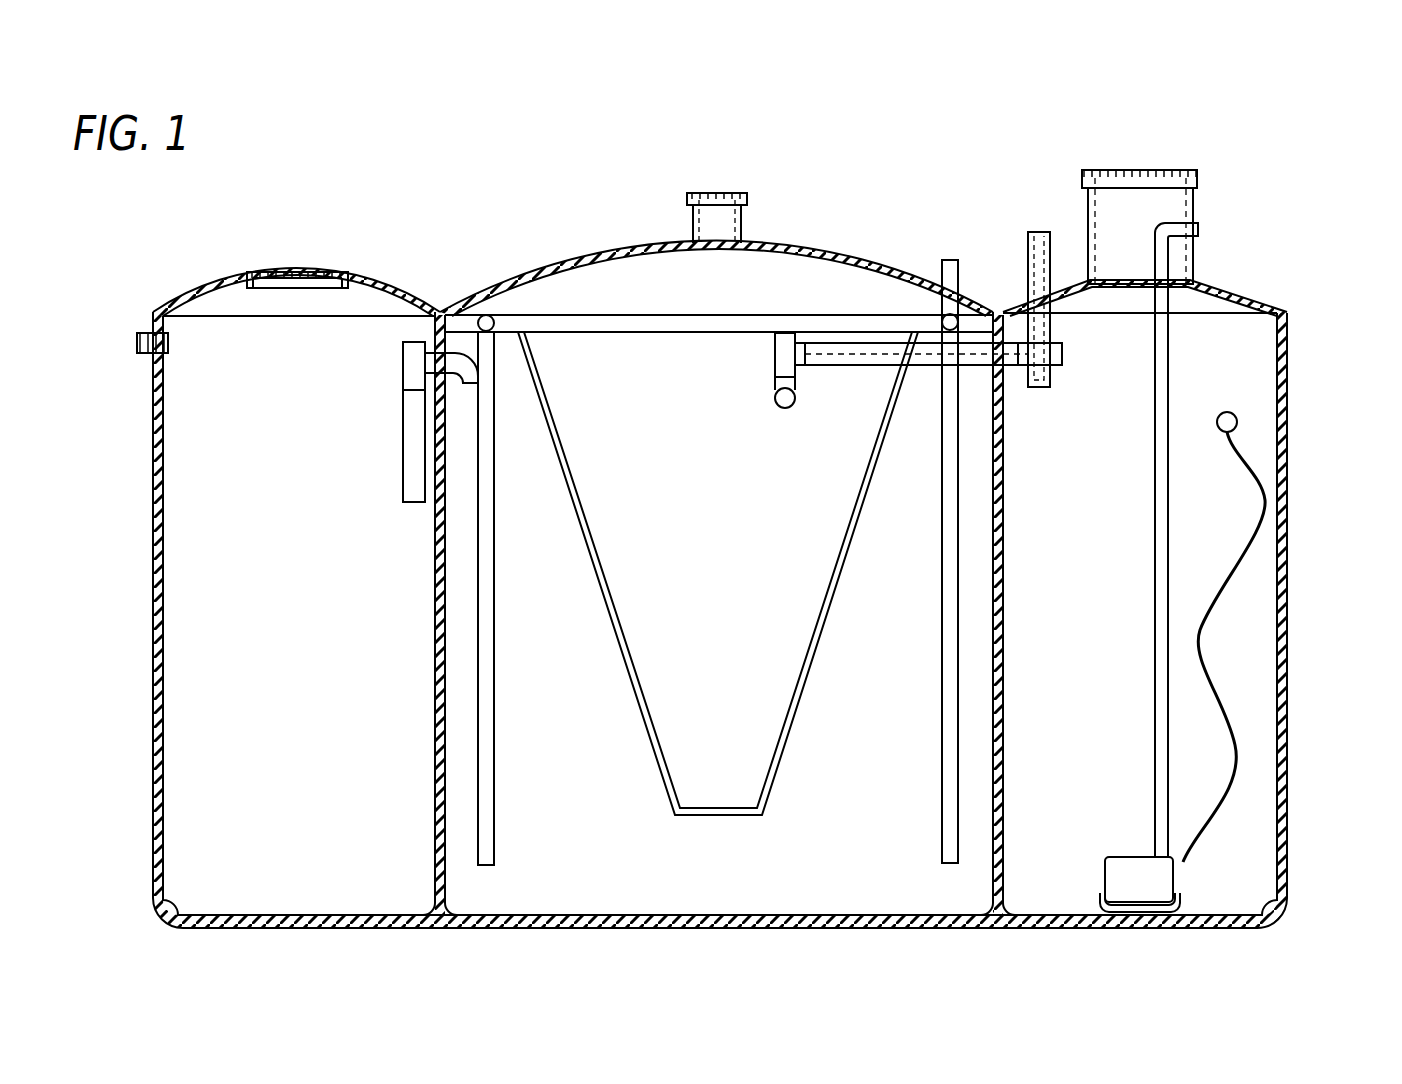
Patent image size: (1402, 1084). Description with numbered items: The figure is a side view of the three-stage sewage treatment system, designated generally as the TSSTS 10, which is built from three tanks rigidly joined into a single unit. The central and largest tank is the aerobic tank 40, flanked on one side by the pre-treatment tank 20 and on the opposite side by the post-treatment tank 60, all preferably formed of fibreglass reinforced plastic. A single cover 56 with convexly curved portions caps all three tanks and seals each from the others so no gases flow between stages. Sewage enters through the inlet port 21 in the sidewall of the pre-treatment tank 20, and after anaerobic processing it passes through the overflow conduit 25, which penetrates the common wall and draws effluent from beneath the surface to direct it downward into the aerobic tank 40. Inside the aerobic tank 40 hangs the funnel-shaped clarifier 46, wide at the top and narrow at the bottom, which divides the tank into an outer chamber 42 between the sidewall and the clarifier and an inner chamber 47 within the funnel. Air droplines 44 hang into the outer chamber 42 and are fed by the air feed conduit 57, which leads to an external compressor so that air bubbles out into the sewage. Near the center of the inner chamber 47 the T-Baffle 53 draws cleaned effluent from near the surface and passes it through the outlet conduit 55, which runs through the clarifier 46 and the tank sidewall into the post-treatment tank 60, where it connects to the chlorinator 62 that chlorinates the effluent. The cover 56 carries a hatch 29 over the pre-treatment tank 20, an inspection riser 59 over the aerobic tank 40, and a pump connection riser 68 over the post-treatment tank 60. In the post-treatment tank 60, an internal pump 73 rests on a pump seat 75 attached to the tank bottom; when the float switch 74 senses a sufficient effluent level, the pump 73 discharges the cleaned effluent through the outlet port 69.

The TSSTS 10 is at (1307, 220).
The pre-treatment tank 20 is at (318, 876).
The inlet port 21 is at (147, 333).
The overflow conduit 25 is at (403, 357).
The hatch 29 is at (303, 270).
The aerobic tank 40 is at (735, 876).
The outer chamber 42 is at (632, 760).
The air droplines 44 is at (494, 865).
The clarifier 46 is at (793, 737).
The inner chamber 47 is at (620, 425).
The T-Baffle 53 is at (778, 352).
The outlet conduit 55 is at (830, 343).
The cover 56 is at (632, 240).
The air feed conduit 57 is at (860, 316).
The inspection riser 59 is at (732, 192).
The post-treatment tank 60 is at (1068, 841).
The chlorinator 62 is at (1040, 232).
The pump connection riser 68 is at (1172, 171).
The outlet port 69 is at (1200, 223).
The internal pump 73 is at (1175, 880).
The float switch 74 is at (1226, 412).
The pump seat 75 is at (1200, 917).